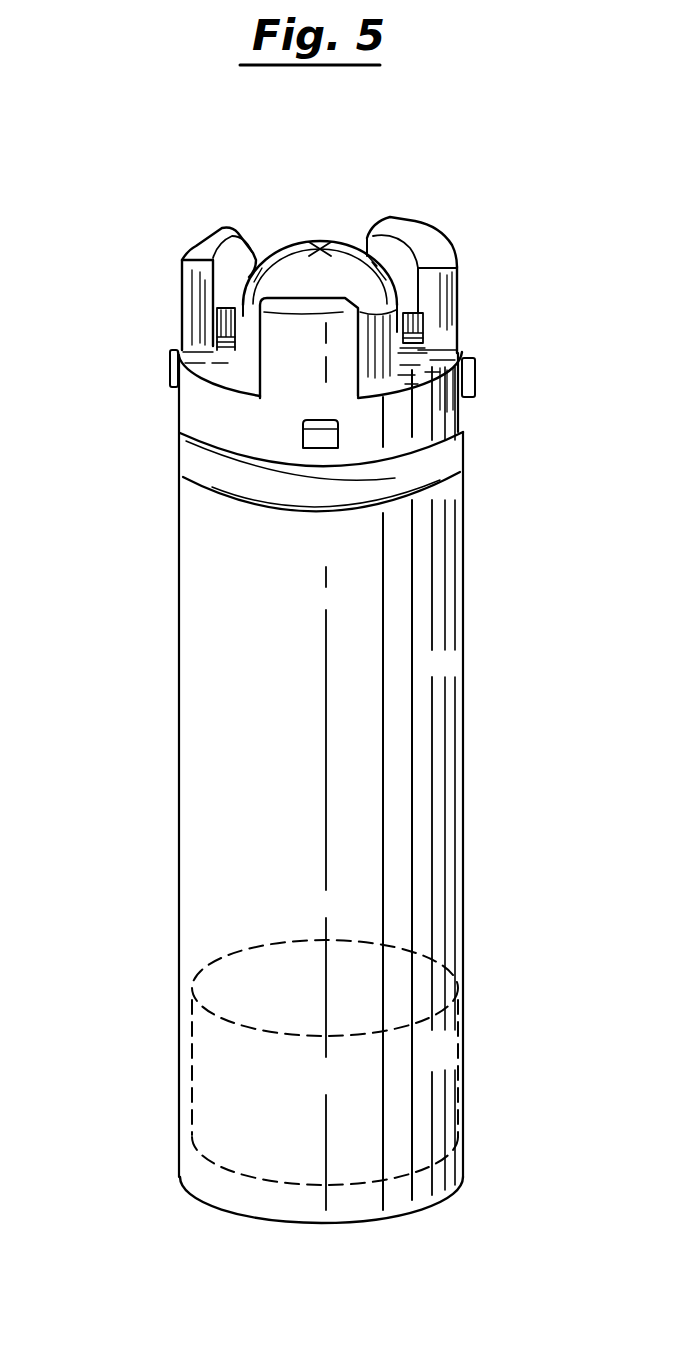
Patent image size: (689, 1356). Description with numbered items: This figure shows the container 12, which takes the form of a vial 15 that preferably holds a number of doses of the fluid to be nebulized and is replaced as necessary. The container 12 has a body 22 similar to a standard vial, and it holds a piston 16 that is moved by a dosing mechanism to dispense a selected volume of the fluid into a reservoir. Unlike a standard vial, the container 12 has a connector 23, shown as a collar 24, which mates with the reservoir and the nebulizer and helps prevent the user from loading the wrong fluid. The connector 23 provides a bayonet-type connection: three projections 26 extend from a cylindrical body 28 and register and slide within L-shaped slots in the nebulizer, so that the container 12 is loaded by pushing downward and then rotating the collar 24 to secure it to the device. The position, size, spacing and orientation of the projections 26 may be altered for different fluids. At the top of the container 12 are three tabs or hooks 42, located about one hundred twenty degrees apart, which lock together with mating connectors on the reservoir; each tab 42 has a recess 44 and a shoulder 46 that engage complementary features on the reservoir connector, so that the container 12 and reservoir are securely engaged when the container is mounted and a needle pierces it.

The container 12 is at (432, 662).
The vial 15 is at (203, 637).
The piston 16 is at (435, 1058).
The body 22 is at (463, 783).
The connector 23 is at (453, 428).
The collar 24 is at (445, 349).
The projections 26 is at (172, 366).
The cylindrical body 28 is at (203, 418).
The tabs 42 is at (457, 270).
The recess 44 is at (447, 330).
The shoulder 46 is at (227, 273).